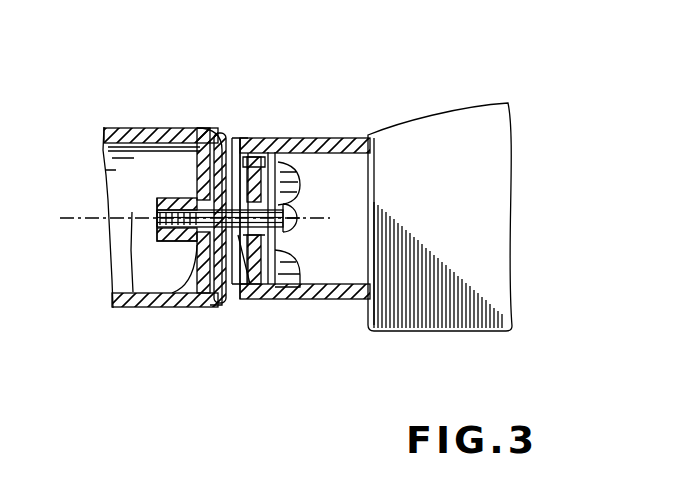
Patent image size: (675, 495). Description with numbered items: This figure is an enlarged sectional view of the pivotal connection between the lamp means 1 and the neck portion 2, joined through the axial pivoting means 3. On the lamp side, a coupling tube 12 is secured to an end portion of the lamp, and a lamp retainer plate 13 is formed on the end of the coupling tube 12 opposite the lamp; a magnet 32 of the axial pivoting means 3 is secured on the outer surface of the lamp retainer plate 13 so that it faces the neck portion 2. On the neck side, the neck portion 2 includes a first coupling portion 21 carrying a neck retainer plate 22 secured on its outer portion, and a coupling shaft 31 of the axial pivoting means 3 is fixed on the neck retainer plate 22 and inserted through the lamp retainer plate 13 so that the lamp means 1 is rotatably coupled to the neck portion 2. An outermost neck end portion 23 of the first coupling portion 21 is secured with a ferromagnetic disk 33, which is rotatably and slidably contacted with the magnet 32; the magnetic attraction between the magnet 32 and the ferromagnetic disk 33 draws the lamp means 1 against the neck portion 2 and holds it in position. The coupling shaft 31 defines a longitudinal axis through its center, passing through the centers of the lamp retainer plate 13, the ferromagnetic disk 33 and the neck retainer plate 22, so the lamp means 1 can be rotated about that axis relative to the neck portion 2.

The lamp means 1 is at (454, 106).
The neck portion 2 is at (106, 125).
The axial pivoting means 3 is at (252, 303).
The coupling tube 12 is at (329, 135).
The lamp retainer plate 13 is at (301, 308).
The first coupling portion 21 is at (166, 125).
The neck retainer plate 22 is at (164, 308).
The outermost neck end portion 23 is at (226, 298).
The coupling shaft 31 is at (126, 303).
The magnet 32 is at (254, 135).
The ferromagnetic disk 33 is at (218, 134).